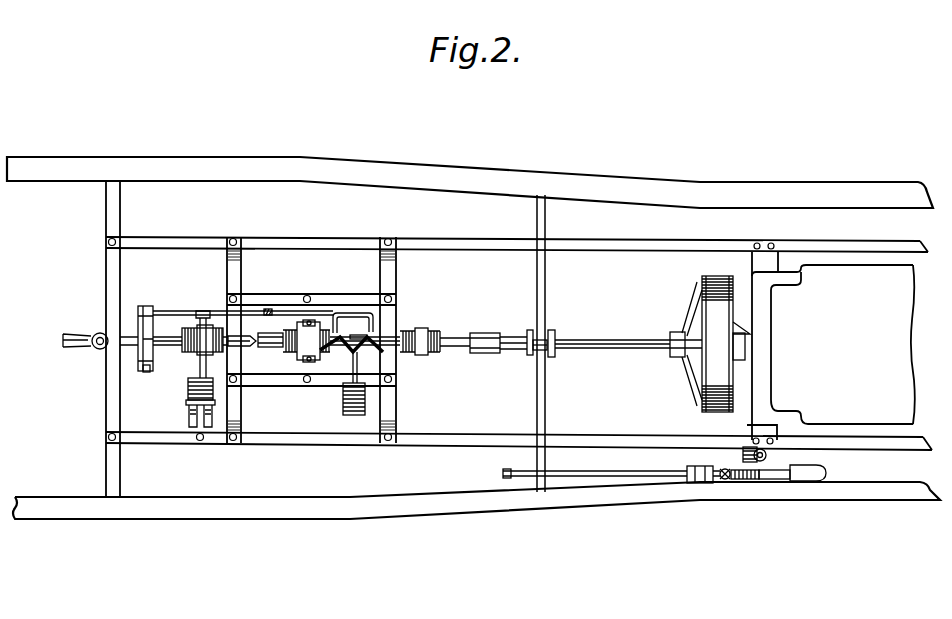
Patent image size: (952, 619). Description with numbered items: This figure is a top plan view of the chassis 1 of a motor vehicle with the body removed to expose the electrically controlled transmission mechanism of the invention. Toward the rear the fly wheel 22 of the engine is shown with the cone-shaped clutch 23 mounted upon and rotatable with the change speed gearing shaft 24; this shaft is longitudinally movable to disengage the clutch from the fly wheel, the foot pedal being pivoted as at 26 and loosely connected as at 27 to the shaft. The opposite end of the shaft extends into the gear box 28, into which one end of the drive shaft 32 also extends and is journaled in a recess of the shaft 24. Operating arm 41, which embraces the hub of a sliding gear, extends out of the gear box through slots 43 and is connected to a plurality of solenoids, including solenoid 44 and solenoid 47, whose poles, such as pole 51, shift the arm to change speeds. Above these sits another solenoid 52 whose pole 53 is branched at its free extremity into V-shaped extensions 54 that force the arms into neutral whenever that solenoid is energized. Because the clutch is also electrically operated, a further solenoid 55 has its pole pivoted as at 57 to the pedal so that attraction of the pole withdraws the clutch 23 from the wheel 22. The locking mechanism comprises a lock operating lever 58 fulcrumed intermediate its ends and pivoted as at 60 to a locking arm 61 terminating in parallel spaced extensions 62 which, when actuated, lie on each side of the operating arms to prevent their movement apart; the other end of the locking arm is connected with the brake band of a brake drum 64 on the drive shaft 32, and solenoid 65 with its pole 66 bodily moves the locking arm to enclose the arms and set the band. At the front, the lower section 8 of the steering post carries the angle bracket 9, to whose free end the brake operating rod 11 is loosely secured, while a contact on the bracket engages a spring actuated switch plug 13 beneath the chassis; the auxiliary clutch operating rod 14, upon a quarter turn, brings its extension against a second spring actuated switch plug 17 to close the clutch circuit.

The chassis 1 is at (593, 178).
The lower section of steering post 8 is at (781, 481).
The angle bracket 9 is at (722, 480).
The brake operating rod 11 is at (459, 339).
The spring actuated switch plug 13 is at (693, 464).
The auxiliary clutch operating rod 14 is at (741, 482).
The second spring actuated switch plug 17 is at (744, 455).
The fly wheel 22 is at (722, 272).
The cone-shaped clutch 23 is at (688, 367).
The change speed gearing shaft 24 is at (606, 348).
The pivot 26 is at (536, 352).
The loose connection 27 is at (554, 335).
The gear box 28 is at (303, 390).
The drive shaft 32 is at (161, 334).
The operating arm 41 is at (284, 348).
The slots 43 is at (255, 388).
The solenoid 44 is at (322, 330).
The solenoid 47 is at (190, 352).
The pole 51 is at (256, 388).
The solenoid 52 is at (366, 398).
The pole 53 is at (352, 370).
The branched extensions 54 is at (378, 355).
The solenoid 55 is at (429, 333).
The pivot 57 is at (528, 336).
The lock operating lever 58 is at (270, 310).
The pivot 60 is at (262, 311).
The locking arm 61 is at (180, 311).
The parallel spaced extensions 62 is at (378, 320).
The brake drum 64 is at (147, 372).
The solenoid 65 is at (199, 374).
The pole 66 is at (186, 408).